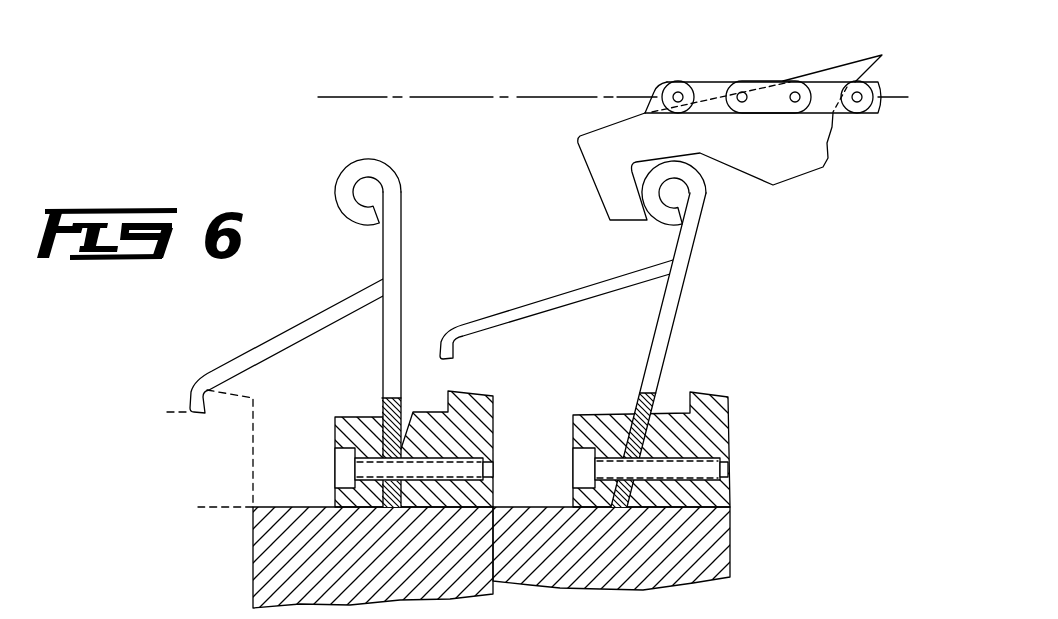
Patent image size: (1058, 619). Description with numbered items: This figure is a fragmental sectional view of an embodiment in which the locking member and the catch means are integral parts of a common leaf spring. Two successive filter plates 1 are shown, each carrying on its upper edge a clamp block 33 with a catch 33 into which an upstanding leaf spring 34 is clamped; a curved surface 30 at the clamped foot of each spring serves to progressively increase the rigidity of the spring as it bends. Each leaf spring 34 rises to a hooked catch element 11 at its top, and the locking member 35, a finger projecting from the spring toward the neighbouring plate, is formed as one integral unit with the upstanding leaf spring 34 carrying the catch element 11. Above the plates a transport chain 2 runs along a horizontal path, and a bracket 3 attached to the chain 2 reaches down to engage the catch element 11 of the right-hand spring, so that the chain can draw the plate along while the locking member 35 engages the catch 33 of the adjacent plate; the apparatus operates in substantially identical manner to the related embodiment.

The filter plate 1 is at (767, 518).
The conveyor chain 2 is at (707, 74).
The chain bracket 3 is at (806, 172).
The catch element 11 is at (738, 200).
The curved surface 30 is at (404, 440).
The catch 33 is at (450, 390).
The upstanding leaf spring 34 is at (401, 307).
The locking member 35 is at (264, 343).